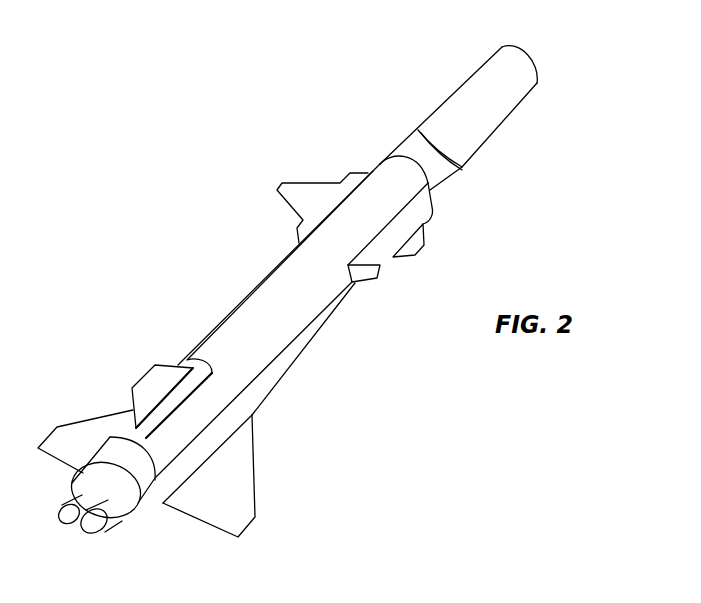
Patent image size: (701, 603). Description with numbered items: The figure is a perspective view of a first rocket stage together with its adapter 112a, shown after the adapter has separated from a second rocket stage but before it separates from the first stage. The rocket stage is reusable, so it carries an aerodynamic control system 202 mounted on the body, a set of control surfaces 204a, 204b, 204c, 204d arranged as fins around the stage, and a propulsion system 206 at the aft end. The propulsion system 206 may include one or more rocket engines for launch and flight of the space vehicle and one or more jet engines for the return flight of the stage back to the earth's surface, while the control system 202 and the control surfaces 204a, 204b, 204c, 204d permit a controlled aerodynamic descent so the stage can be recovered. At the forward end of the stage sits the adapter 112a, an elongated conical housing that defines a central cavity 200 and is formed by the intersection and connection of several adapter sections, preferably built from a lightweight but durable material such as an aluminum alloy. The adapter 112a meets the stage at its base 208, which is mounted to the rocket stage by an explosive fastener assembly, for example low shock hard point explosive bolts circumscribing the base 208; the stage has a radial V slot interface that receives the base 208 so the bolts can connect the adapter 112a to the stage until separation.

The central cavity 200 is at (527, 56).
The adapter 112a is at (506, 120).
The base 208 is at (462, 168).
The aerodynamic control system 202 is at (388, 262).
The control surface 204a is at (255, 468).
The control surface 204b is at (80, 430).
The control surface 204c is at (142, 372).
The control surface 204d is at (297, 183).
The propulsion system 206 is at (117, 510).